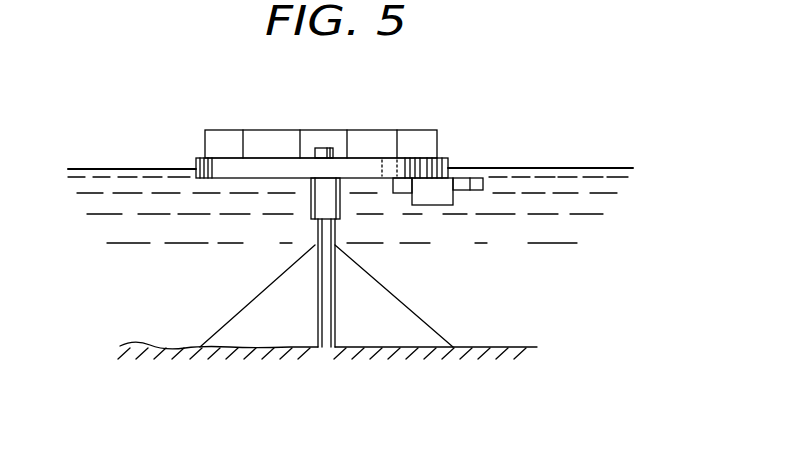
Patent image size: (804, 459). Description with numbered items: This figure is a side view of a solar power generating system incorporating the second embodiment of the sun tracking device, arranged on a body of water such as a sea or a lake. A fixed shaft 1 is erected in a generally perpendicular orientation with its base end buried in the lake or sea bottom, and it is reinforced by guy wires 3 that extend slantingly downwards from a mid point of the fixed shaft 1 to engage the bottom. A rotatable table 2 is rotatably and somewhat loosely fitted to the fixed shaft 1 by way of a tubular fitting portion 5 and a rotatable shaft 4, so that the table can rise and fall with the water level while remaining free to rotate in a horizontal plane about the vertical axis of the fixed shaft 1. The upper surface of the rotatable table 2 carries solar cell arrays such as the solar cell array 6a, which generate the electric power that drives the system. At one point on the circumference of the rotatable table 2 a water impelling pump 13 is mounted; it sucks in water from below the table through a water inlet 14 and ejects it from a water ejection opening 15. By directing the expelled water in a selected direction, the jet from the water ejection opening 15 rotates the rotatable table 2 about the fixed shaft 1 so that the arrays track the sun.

The fixed shaft 1 is at (317, 300).
The rotatable table 2 is at (223, 175).
The guy wires 3 is at (410, 313).
The rotatable shaft 4 is at (323, 150).
The fitting portion 5 is at (312, 210).
The solar cell array 6a is at (425, 137).
The water impelling pump 13 is at (430, 200).
The water inlet 14 is at (400, 192).
The water ejection opening 15 is at (473, 190).